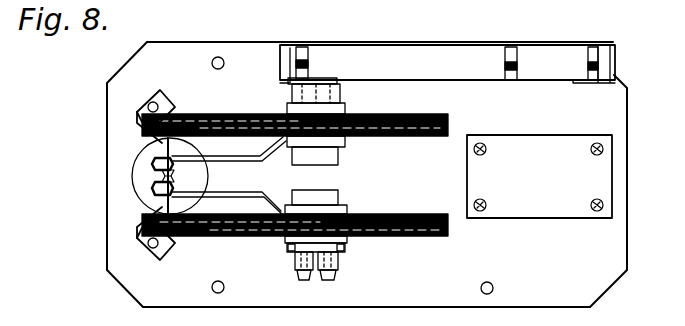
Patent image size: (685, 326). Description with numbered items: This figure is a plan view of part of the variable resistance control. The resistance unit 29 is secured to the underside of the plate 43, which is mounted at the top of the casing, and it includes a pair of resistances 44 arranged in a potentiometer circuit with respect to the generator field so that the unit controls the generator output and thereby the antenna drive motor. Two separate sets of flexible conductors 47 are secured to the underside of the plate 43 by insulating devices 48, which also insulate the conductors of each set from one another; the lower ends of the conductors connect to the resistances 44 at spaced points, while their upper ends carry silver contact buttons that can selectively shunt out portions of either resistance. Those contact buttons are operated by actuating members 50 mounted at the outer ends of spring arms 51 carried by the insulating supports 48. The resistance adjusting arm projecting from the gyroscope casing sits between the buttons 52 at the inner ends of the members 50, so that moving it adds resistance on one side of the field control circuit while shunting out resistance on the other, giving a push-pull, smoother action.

The plate 43 is at (617, 247).
The resistances 44 is at (423, 60).
The flexible conductors 47 is at (240, 115).
The resistance unit 29 is at (289, 108).
The insulating devices 48 is at (335, 198).
The actuating members 50 is at (165, 153).
The spring arms 51 is at (233, 157).
The buttons 52 is at (158, 186).